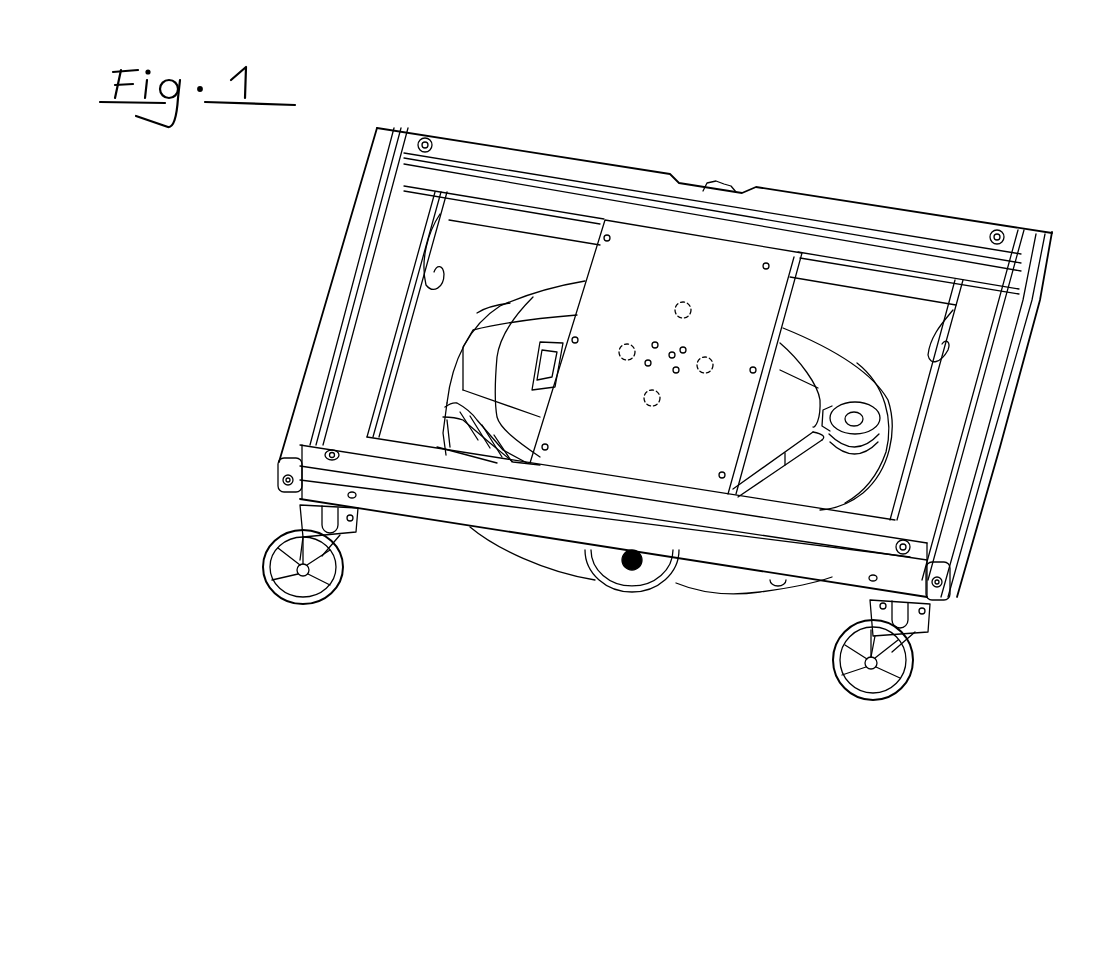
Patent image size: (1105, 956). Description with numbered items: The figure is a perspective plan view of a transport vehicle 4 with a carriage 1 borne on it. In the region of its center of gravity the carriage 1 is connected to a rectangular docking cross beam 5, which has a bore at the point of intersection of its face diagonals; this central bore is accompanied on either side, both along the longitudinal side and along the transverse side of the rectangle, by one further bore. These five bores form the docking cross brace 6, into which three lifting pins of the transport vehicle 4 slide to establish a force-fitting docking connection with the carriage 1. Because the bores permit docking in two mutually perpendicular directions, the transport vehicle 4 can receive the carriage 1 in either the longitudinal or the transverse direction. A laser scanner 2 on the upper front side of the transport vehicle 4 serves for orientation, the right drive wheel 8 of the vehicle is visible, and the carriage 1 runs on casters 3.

The carriage 1 is at (345, 274).
The laser scanner 2 is at (830, 441).
The casters 3 is at (910, 675).
The transport vehicle 4 is at (700, 578).
The docking cross beam 5 is at (700, 467).
The docking cross brace 6 is at (650, 400).
The right drive wheel 8 is at (628, 577).